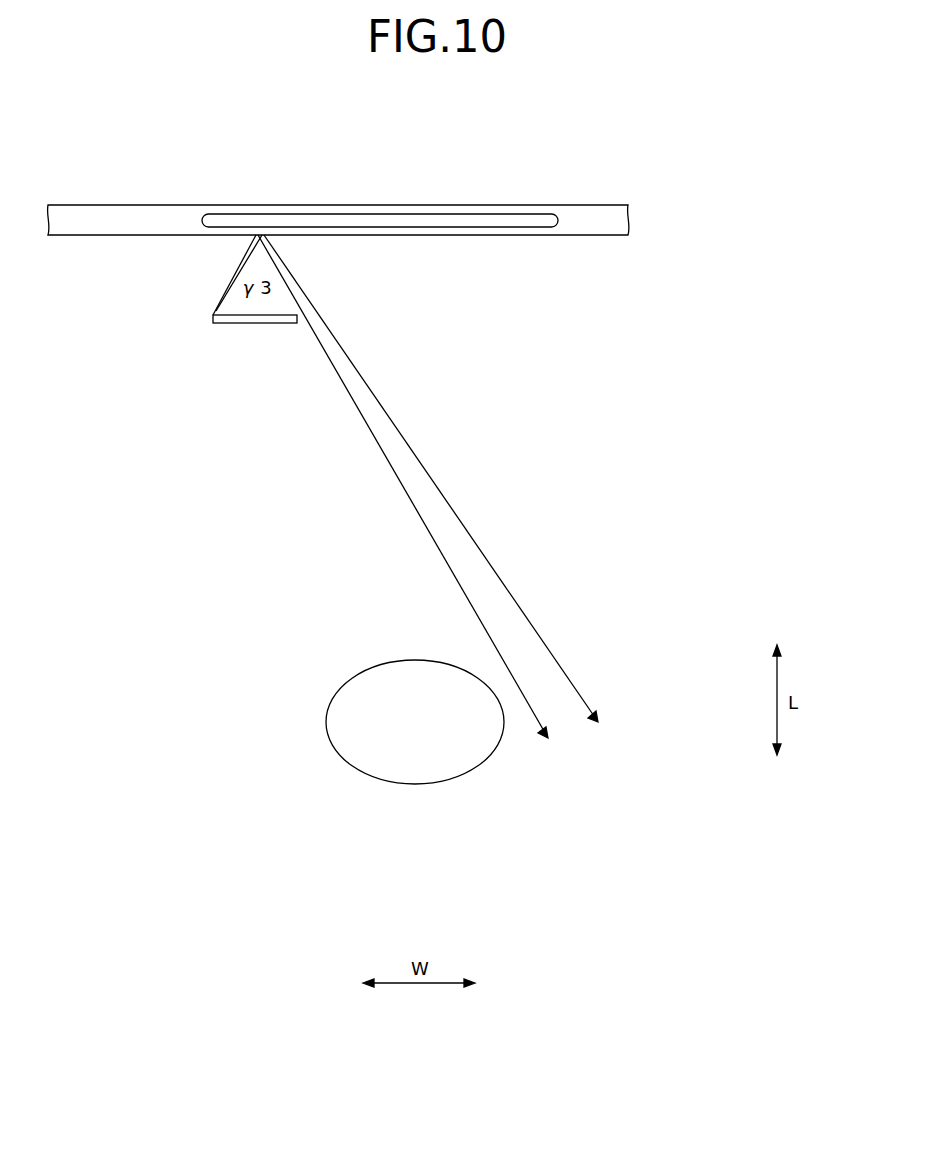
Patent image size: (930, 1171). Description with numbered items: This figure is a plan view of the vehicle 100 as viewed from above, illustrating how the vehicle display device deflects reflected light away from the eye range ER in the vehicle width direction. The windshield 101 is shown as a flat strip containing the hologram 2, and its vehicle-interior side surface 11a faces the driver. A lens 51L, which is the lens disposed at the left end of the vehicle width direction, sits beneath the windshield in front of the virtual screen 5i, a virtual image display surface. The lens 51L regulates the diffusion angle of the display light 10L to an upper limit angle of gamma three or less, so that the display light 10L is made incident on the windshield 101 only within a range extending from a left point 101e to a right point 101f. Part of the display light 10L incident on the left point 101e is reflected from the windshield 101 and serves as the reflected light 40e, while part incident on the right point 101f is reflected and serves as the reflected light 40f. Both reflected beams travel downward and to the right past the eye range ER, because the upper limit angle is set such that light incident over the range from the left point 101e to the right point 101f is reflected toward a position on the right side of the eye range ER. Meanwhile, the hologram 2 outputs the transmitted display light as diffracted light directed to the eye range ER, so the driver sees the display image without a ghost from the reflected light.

The windshield 101 is at (583, 190).
The hologram 2 is at (453, 220).
The vehicle-interior side surface 11a is at (453, 237).
The display light 10L is at (215, 297).
The left point 101e is at (250, 240).
The right point 101f is at (272, 242).
The lens 51L is at (213, 324).
The virtual screen 5i is at (252, 324).
The reflected light 40e is at (437, 545).
The reflected light 40f is at (495, 563).
The eye range ER is at (420, 772).
The vehicle 100 is at (708, 317).